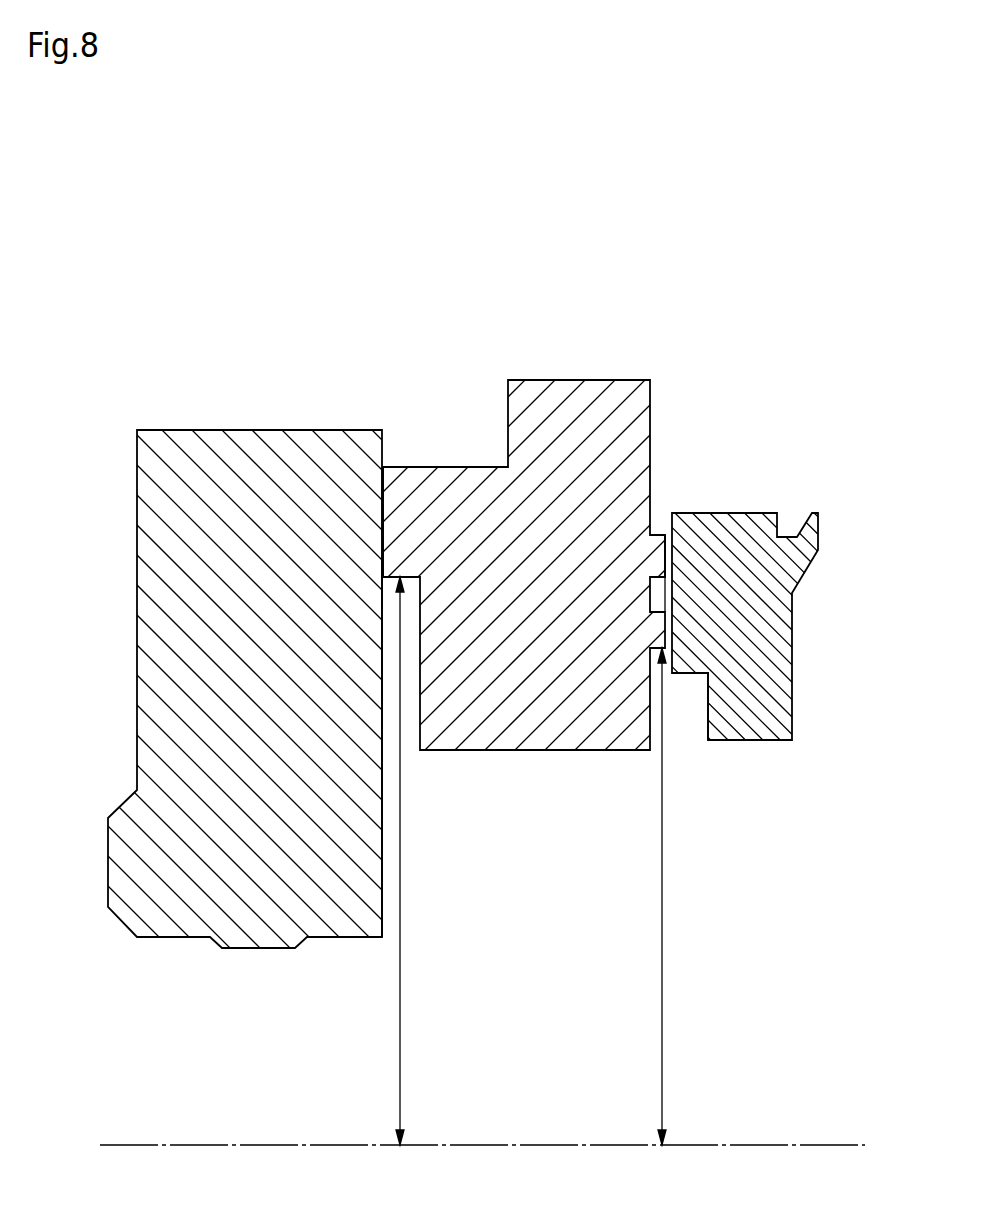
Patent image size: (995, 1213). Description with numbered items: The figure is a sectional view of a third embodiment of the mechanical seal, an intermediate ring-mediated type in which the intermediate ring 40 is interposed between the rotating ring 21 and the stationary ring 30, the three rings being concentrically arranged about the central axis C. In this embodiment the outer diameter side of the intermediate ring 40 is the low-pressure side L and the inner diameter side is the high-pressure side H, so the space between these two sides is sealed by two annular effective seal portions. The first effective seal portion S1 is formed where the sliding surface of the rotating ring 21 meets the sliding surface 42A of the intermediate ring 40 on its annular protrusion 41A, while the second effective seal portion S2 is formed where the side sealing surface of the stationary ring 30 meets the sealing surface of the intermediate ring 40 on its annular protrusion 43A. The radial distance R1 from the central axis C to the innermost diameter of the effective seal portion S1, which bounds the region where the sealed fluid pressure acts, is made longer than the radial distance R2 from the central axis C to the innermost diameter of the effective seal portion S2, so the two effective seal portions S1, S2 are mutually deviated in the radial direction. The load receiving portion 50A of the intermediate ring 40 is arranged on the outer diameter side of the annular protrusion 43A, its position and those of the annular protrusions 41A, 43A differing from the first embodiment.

The rotating ring 21 is at (248, 422).
The intermediate ring 40 is at (486, 364).
The stationary ring 30 is at (761, 428).
The annular protrusion 41A is at (400, 508).
The load receiving portion 50A is at (663, 545).
The annular protrusion 43A is at (662, 636).
The sliding surface 42A is at (382, 549).
The effective seal portion S1 is at (382, 512).
The effective seal portion S2 is at (670, 624).
The radial distance R1 is at (420, 861).
The radial distance R2 is at (682, 896).
The central axis C is at (470, 1145).
The low-pressure side L is at (350, 291).
The high-pressure side H is at (738, 861).